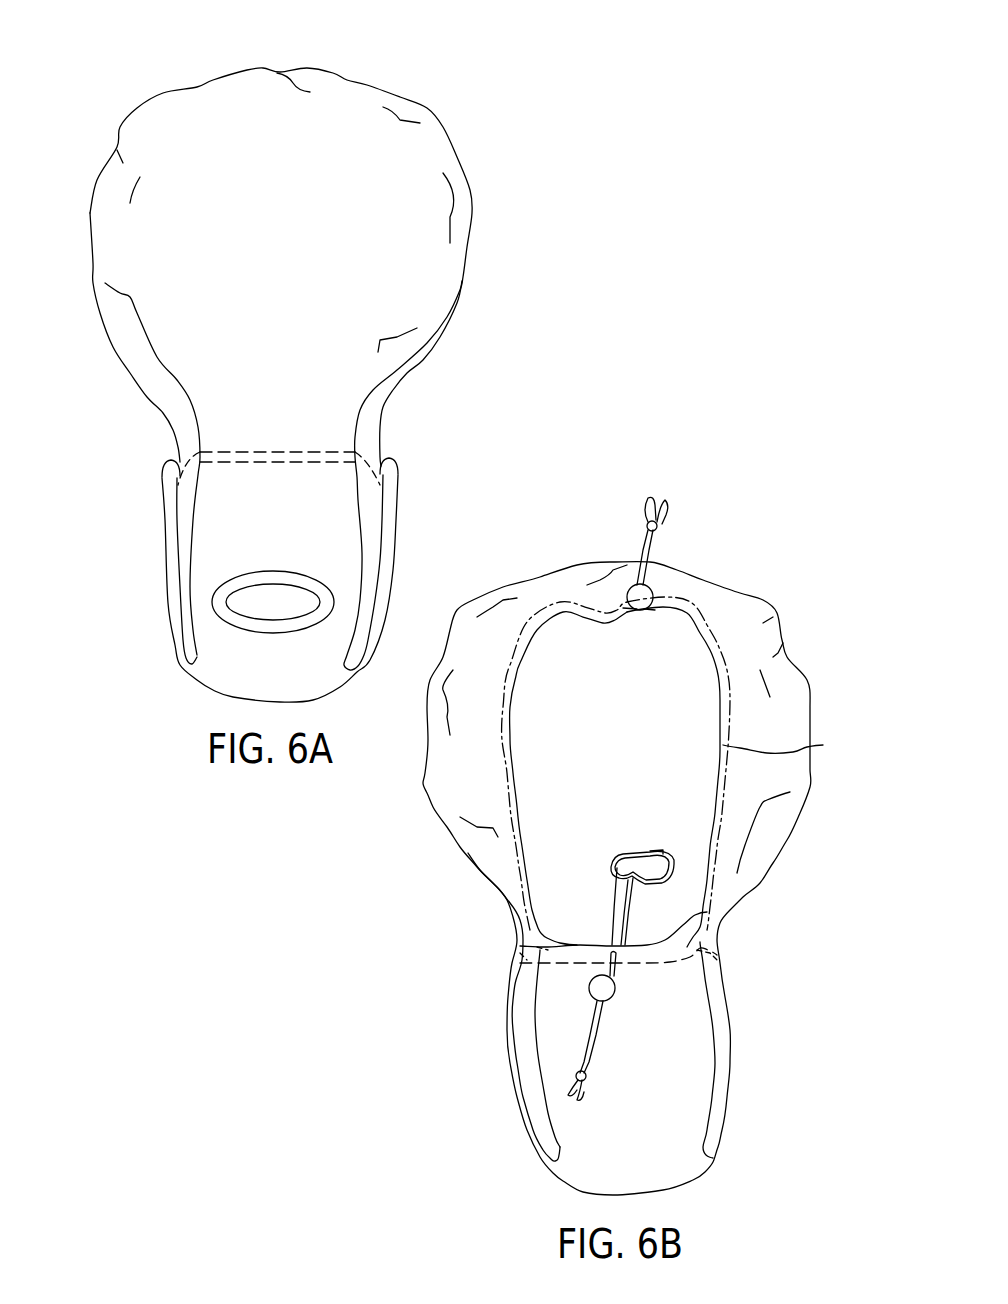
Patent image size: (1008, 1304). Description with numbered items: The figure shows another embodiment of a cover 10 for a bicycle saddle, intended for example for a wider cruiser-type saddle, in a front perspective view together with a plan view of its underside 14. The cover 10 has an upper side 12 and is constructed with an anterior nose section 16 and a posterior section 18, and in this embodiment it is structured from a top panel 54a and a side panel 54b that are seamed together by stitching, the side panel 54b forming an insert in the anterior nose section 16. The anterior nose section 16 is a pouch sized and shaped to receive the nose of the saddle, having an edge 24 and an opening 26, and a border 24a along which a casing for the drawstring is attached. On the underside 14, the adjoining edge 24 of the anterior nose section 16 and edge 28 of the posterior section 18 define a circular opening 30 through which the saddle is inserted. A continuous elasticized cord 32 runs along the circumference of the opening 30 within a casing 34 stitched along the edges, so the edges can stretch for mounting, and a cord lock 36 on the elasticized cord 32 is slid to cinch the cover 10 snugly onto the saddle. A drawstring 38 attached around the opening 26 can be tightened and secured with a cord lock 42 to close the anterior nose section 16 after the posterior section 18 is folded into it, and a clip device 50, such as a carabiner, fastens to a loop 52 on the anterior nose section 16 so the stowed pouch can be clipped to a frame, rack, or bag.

In FIG. 6A, the cover 10 is at (516, 220).
In FIG. 6B, the cover 10 is at (795, 567).
In FIG. 6A, the upper side 12 is at (423, 142).
In FIG. 6B, the underside 14 is at (763, 625).
In FIG. 6A, the anterior nose section 16 is at (207, 668).
In FIG. 6B, the anterior nose section 16 is at (687, 1167).
In FIG. 6A, the posterior section 18 is at (338, 97).
In FIG. 6B, the posterior section 18 is at (793, 690).
In FIG. 6A, the edge 24 is at (170, 477).
In FIG. 6B, the edge 24 is at (707, 912).
In FIG. 6A, the border 24a is at (303, 450).
In FIG. 6A, the opening 26 is at (150, 443).
In FIG. 6B, the opening 26 is at (575, 932).
In FIG. 6B, the edge 28 is at (523, 823).
In FIG. 6B, the circular opening 30 is at (580, 660).
In FIG. 6B, the elasticized cord 32 is at (647, 550).
In FIG. 6B, the casing 34 is at (785, 745).
In FIG. 6B, the cord lock 36 is at (647, 593).
In FIG. 6B, the drawstring 38 is at (593, 1037).
In FIG. 6B, the cord lock 42 is at (617, 997).
In FIG. 6B, the clip device 50 is at (662, 850).
In FIG. 6B, the loop 52 is at (615, 900).
In FIG. 6A, the top panel 54a is at (433, 293).
In FIG. 6B, the top panel 54a is at (468, 852).
In FIG. 6A, the side panel 54b is at (405, 365).
In FIG. 6B, the side panel 54b is at (457, 790).